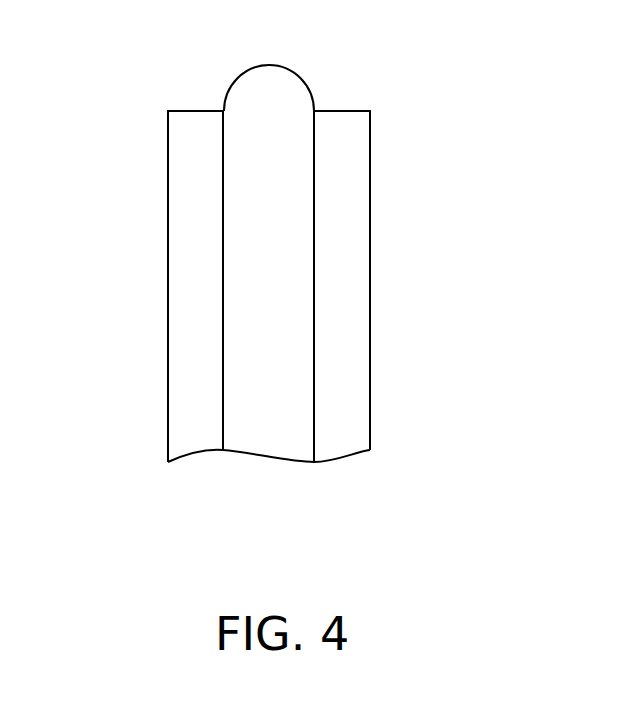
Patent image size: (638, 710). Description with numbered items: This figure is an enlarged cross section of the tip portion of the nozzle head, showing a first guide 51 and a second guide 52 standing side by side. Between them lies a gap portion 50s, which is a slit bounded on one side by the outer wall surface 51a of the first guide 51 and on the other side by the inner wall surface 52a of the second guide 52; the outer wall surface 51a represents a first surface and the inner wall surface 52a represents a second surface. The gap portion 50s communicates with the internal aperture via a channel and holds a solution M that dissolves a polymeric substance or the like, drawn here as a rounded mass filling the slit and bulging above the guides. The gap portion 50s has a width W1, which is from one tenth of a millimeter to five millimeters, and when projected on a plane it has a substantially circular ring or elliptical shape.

The first guide 51 is at (188, 382).
The second guide 52 is at (342, 408).
The outer wall surface of the first guide 51a is at (230, 220).
The inner wall surface of the second guide 52a is at (309, 220).
The gap portion 50s is at (287, 335).
The solution M is at (297, 72).
The width of the gap portion W1 is at (314, 152).